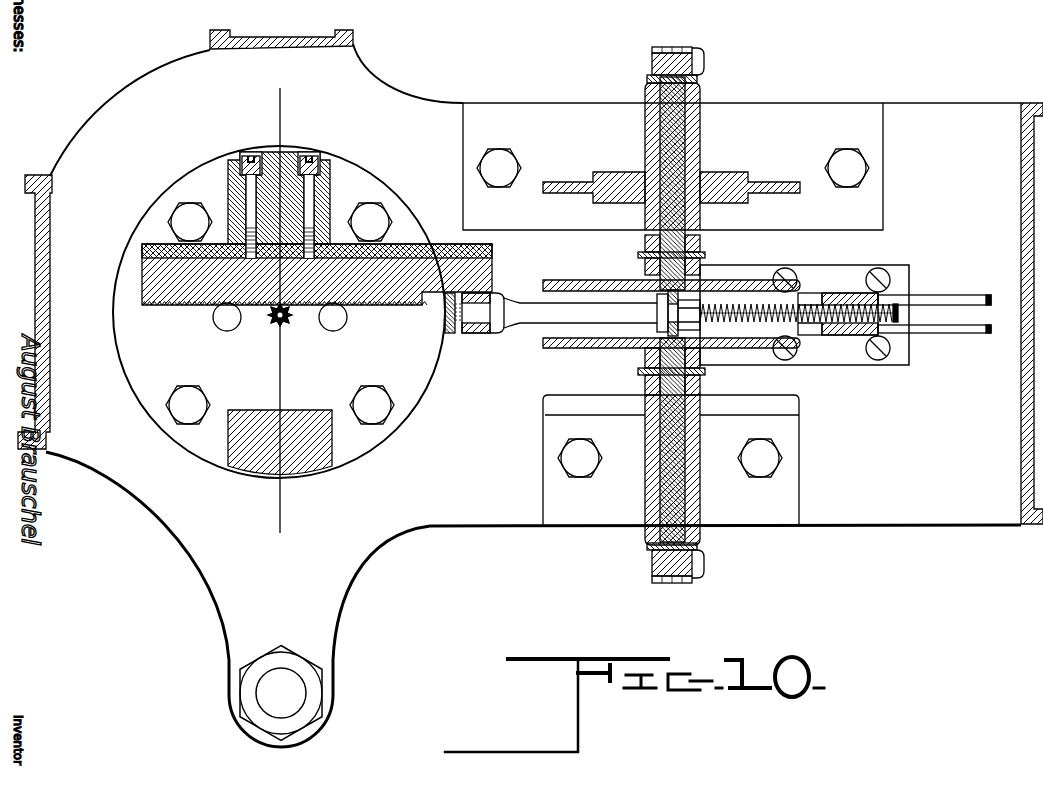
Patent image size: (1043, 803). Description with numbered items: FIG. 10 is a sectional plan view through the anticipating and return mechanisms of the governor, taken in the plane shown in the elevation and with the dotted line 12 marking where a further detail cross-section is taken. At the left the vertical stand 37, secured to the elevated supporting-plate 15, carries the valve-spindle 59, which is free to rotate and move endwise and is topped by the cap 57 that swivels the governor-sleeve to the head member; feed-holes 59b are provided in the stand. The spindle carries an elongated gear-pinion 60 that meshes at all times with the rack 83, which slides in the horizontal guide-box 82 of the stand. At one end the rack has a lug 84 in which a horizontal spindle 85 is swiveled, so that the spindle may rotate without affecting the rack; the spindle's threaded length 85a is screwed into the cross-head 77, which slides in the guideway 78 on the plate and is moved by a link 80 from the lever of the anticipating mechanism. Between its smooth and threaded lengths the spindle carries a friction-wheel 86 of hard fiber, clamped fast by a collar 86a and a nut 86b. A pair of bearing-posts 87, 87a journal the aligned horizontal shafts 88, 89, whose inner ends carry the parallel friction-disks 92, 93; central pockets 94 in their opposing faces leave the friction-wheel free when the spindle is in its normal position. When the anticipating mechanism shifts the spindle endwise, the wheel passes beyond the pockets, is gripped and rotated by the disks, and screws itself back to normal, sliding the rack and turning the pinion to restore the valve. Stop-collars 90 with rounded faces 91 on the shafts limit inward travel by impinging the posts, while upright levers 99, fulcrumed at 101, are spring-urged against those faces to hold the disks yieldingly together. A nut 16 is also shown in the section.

The section line 12 is at (279, 312).
The elevated supporting-plate 15 is at (485, 528).
The bolt 16 is at (297, 695).
The vertical stand 37 is at (322, 460).
The cap 57 is at (340, 182).
The valve-spindle 59 is at (274, 323).
The feed-holes 59b is at (222, 325).
The elongated gear-pinion 60 is at (290, 323).
The cross-head 77 is at (842, 337).
The guideway 78 is at (893, 268).
The link 80 is at (958, 298).
The guide-box 82 is at (395, 243).
The rack 83 is at (168, 307).
The lug 84 is at (488, 333).
The spindle 85 is at (540, 318).
The threaded length 85a is at (806, 337).
The friction-wheel 86 is at (648, 345).
The collar 86a is at (660, 300).
The nut 86b is at (690, 300).
The bearing-post 87 is at (700, 497).
The bearing-post 87a is at (700, 135).
The horizontal shaft 88 is at (657, 505).
The horizontal shaft 89 is at (672, 122).
The stop-collar 90 is at (646, 86).
The rounded ends 91 is at (648, 84).
The friction-disk 92 is at (580, 349).
The friction-disk 93 is at (572, 281).
The central pockets 94 is at (665, 303).
The lever 99 is at (672, 55).
The fulcrum 101 is at (699, 62).